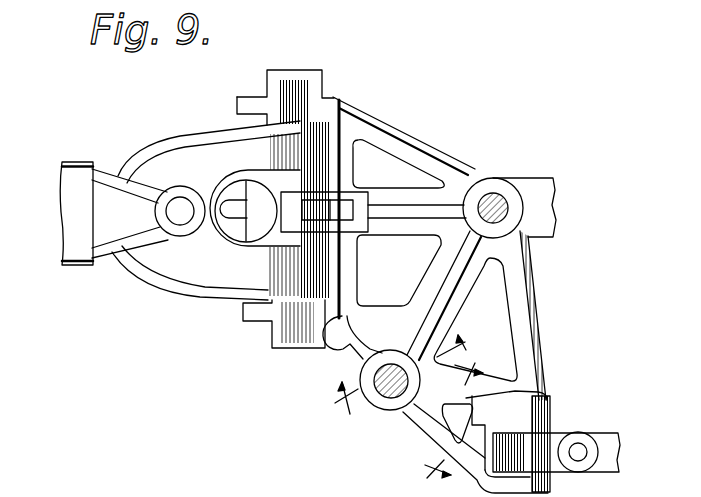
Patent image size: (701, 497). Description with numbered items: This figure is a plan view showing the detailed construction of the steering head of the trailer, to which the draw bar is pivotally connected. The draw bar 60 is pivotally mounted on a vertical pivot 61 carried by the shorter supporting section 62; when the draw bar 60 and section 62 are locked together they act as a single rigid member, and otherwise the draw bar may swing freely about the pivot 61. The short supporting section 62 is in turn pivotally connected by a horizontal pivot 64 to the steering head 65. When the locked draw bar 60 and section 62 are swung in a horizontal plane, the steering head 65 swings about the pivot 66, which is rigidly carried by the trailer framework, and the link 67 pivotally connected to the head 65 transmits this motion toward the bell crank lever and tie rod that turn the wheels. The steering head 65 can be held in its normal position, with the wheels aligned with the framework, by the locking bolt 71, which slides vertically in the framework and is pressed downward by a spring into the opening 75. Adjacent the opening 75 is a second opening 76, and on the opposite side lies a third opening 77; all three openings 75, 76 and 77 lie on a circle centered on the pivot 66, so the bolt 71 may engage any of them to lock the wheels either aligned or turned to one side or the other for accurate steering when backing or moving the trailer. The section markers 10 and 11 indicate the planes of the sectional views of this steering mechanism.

The section line 10 is at (402, 375).
The section line 11 is at (460, 422).
The draw bar 60 is at (70, 231).
The vertical pivot 61 is at (181, 209).
The shorter supporting section 62 is at (195, 286).
The horizontal pivot 64 is at (287, 87).
The steering head 65 is at (401, 135).
The pivot 66 is at (493, 200).
The link 67 is at (605, 442).
The locking bolt 71 is at (389, 397).
The opening 75 is at (390, 398).
The second opening 76 is at (345, 320).
The third opening 77 is at (472, 412).